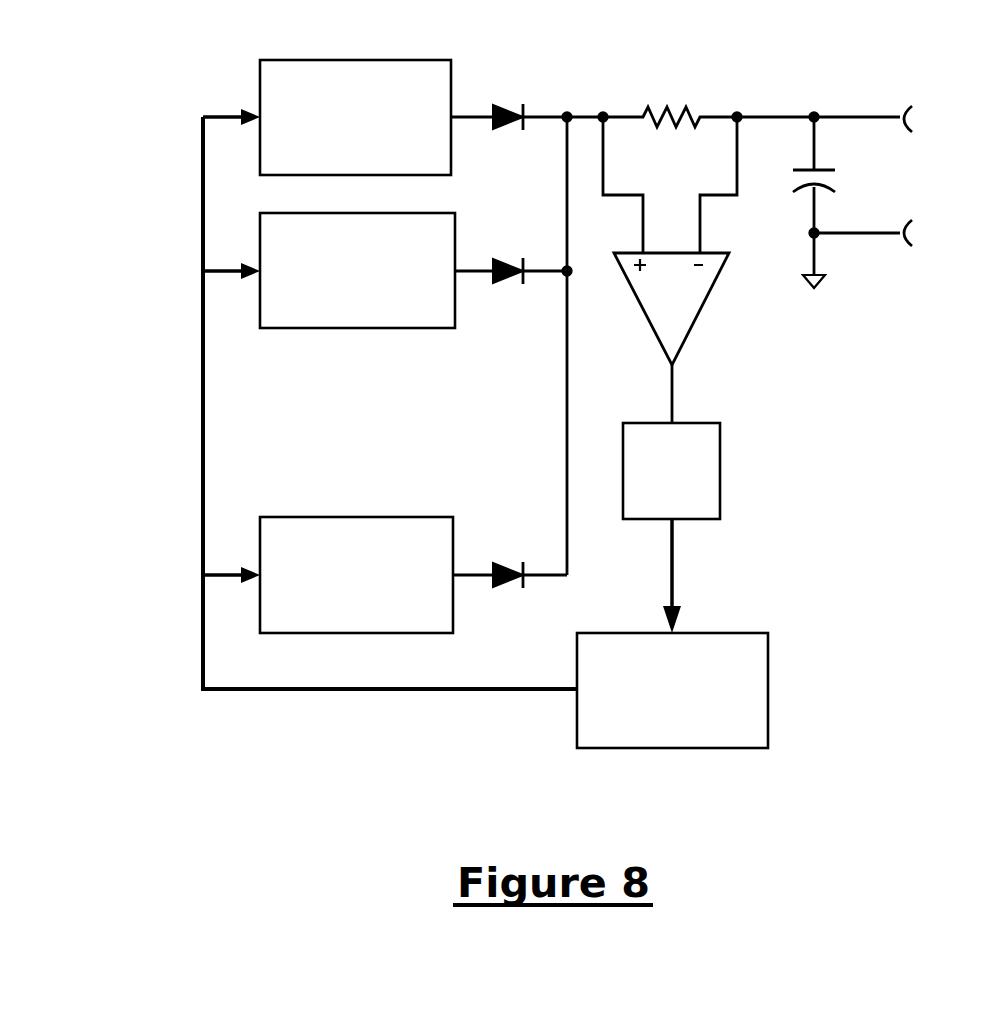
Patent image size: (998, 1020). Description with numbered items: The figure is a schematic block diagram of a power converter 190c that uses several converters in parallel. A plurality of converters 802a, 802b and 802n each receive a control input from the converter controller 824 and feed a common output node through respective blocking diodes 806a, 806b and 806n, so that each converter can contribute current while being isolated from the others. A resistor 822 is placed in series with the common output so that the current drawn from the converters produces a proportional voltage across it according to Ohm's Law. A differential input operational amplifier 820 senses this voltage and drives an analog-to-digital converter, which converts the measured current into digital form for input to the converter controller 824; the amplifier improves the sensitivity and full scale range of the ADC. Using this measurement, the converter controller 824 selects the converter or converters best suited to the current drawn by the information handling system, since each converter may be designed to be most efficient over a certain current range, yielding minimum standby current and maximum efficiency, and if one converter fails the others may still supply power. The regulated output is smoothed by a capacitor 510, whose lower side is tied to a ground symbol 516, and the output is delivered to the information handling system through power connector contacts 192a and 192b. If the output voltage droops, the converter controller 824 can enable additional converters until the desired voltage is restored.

The power converter 190c is at (279, 753).
The converter 802a is at (435, 60).
The converter 802b is at (435, 328).
The converter 802n is at (404, 517).
The blocking diode 806a is at (497, 131).
The blocking diode 806b is at (497, 285).
The blocking diode 806n is at (497, 594).
The resistor 822 is at (681, 110).
The differential input operational amplifier 820 is at (707, 298).
The converter controller 824 is at (740, 633).
The capacitor 510 is at (830, 168).
The ground 516 is at (819, 287).
The power connector contact 192a is at (909, 106).
The power connector contact 192b is at (909, 220).